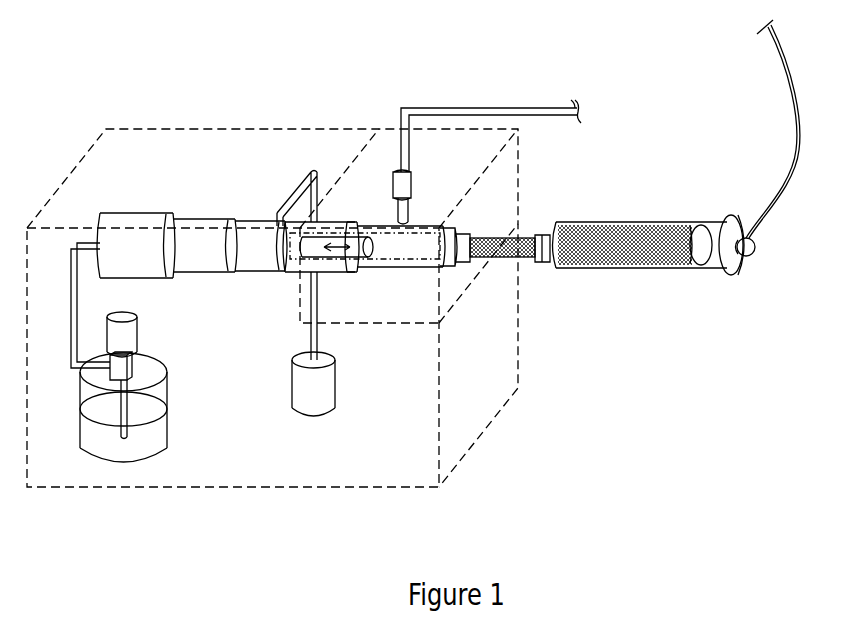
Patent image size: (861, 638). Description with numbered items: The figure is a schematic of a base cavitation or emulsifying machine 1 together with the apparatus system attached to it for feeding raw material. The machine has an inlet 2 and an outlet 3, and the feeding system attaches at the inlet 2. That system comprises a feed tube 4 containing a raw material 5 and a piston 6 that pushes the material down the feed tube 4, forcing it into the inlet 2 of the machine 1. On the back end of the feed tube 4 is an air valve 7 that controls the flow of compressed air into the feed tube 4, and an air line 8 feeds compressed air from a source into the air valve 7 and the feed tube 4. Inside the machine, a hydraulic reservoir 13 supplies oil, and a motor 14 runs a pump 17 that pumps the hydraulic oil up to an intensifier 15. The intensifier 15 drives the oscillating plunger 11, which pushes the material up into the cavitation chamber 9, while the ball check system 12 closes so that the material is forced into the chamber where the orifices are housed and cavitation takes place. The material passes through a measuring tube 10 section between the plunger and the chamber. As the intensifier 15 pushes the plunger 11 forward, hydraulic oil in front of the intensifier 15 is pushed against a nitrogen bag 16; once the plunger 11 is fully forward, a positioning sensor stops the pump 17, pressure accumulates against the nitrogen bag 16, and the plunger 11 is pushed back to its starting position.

The base cavitation machine 1 is at (252, 489).
The inlet 2 is at (512, 255).
The outlet 3 is at (552, 108).
The feed tube 4 is at (714, 275).
The raw material 5 is at (620, 252).
The piston 6 is at (693, 226).
The air valve 7 is at (757, 246).
The air line 8 is at (792, 110).
The cavitation chamber 9 is at (393, 185).
The measuring tube 10 is at (409, 268).
The oscillating plunger 11 is at (335, 258).
The ball check system 12 is at (460, 231).
The hydraulic reservoir 13 is at (153, 434).
The motor 14 is at (132, 338).
The intensifier 15 is at (107, 203).
The nitrogen bag 16 is at (327, 388).
The pump 17 is at (135, 367).